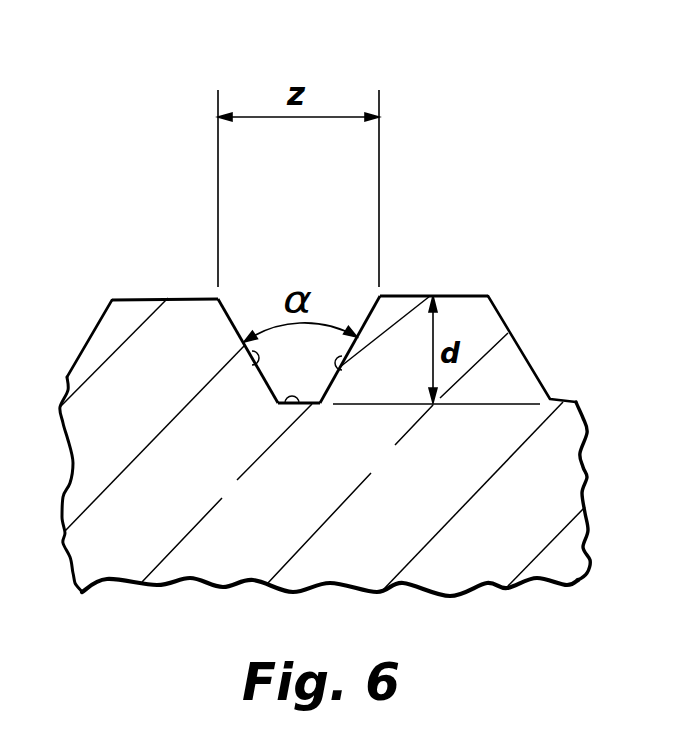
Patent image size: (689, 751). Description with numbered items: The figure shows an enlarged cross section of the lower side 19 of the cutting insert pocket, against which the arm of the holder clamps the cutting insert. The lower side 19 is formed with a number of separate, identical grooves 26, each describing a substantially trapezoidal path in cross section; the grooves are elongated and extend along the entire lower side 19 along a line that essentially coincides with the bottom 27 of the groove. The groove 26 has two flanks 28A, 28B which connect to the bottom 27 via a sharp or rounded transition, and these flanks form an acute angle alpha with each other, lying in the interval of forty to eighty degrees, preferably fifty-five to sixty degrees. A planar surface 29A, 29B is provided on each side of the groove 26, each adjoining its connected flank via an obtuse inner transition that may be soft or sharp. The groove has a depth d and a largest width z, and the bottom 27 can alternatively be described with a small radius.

The lower side of the cutting insert pocket 19 is at (413, 222).
The groove 26 is at (274, 324).
The bottom 27 is at (278, 403).
The flank 28A is at (245, 350).
The flank 28B is at (336, 357).
The planar surface 29A is at (168, 298).
The planar surface 29B is at (438, 295).